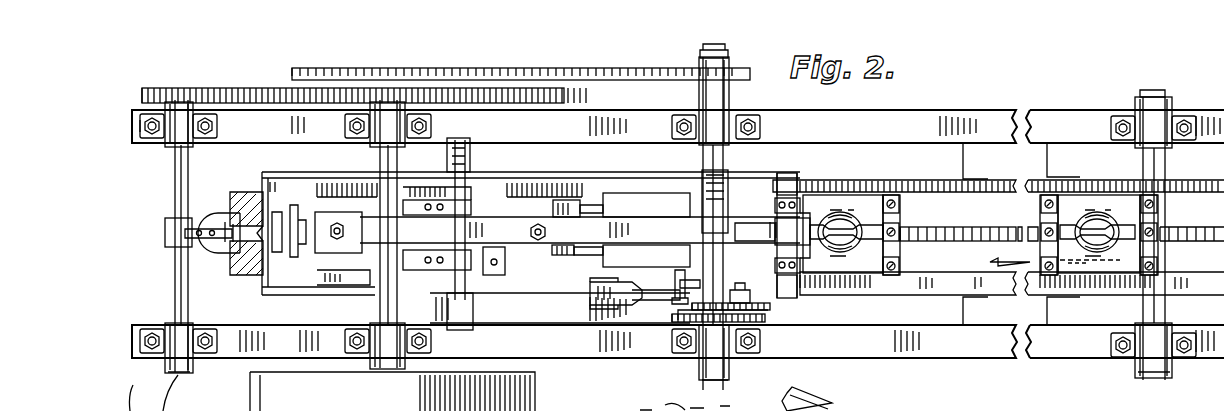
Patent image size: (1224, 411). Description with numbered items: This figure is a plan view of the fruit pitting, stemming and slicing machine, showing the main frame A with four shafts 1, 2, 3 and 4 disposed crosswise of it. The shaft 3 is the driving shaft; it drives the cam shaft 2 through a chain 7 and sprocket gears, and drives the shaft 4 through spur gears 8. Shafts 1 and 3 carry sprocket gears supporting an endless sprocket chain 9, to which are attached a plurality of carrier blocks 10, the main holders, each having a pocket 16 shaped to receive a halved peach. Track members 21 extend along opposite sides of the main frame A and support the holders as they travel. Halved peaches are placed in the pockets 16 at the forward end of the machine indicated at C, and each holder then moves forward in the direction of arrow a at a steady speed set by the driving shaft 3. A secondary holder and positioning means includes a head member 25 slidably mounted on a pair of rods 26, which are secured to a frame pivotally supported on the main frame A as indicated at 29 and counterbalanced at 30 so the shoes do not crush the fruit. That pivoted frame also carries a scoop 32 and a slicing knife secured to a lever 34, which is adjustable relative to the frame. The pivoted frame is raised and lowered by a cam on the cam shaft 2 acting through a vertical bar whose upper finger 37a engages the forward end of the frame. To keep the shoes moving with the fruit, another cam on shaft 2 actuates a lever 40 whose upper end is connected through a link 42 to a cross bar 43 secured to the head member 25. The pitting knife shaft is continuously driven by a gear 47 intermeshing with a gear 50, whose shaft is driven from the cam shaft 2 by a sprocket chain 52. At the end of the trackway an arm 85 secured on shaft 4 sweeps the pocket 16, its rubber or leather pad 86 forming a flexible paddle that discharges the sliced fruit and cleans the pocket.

The main frame A is at (990, 112).
The shaft 1 is at (1164, 155).
The cam shaft 2 is at (725, 170).
The driving shaft 3 is at (387, 153).
The shaft 4 is at (180, 160).
The chain 7 is at (603, 52).
The spur gears 8 is at (254, 62).
The endless sprocket chain 9 is at (925, 223).
The carrier blocks 10 is at (235, 290).
The pocket 16 is at (840, 218).
The track members 21 is at (537, 184).
The head member 25 is at (617, 224).
The rods 26 is at (587, 217).
The pivotal support 29 is at (465, 194).
The counterbalance 30 is at (330, 254).
The scoop 32 is at (302, 254).
The lever 34 is at (804, 388).
The finger 37a is at (750, 190).
The lever 40 is at (588, 295).
The link 42 is at (630, 302).
The cross bar 43 is at (682, 290).
The gear 47 is at (692, 290).
The gear 50 is at (770, 306).
The sprocket chain 52 is at (768, 320).
The arm 85 is at (187, 260).
The pad 86 is at (218, 247).
The arrow a is at (1089, 268).
The forward end C is at (1110, 270).